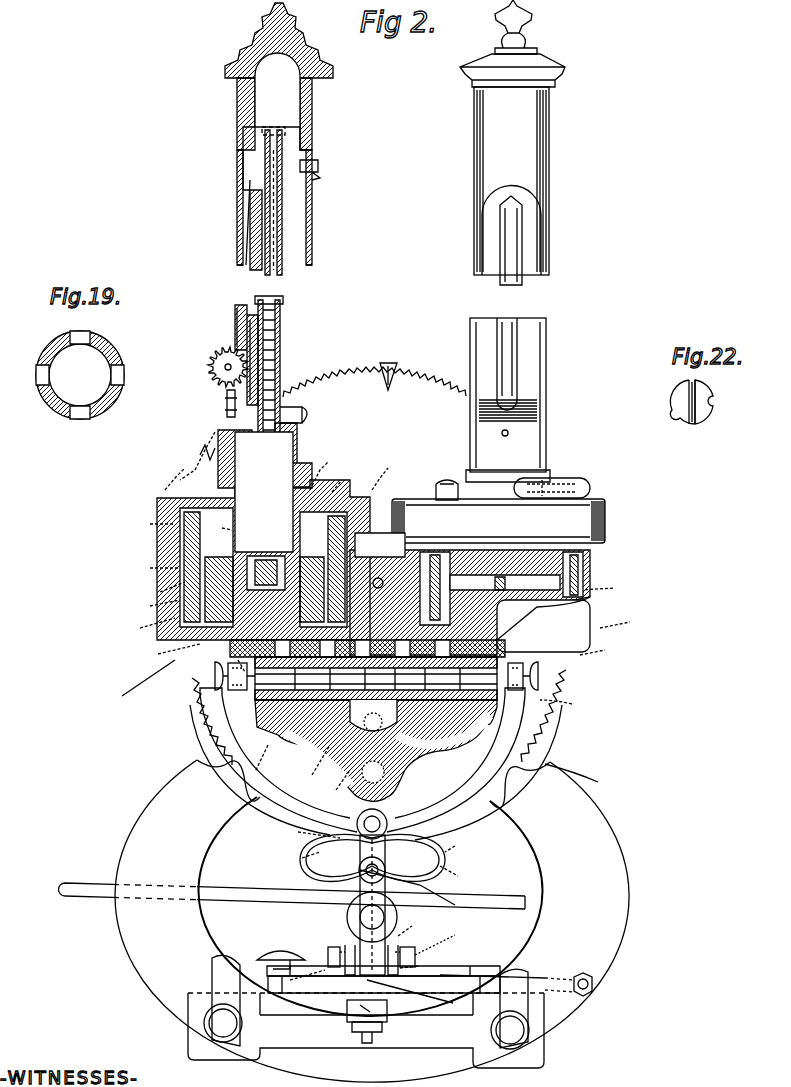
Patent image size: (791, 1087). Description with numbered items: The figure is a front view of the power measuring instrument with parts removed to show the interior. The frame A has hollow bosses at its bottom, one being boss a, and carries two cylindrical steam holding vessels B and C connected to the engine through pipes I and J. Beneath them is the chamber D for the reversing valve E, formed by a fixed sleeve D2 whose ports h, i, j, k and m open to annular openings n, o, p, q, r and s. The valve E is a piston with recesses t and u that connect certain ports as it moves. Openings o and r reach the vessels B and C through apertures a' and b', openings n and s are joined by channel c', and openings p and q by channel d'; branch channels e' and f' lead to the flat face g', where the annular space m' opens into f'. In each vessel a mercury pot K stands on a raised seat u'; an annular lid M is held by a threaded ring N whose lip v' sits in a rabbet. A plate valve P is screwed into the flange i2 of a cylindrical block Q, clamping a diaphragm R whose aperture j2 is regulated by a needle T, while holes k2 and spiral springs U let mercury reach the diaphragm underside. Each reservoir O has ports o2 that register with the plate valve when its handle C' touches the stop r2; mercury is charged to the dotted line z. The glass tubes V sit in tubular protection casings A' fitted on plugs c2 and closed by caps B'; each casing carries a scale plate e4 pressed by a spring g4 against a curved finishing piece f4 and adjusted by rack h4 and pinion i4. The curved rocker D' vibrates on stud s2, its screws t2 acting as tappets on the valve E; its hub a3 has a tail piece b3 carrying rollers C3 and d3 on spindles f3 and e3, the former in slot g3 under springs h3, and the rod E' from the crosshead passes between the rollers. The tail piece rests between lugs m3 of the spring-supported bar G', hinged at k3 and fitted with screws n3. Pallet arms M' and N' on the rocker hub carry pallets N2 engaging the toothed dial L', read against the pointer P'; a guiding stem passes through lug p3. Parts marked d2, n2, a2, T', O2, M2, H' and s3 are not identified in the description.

In FIG. 2, the ornamental cap B' is at (395, 75).
In FIG. 2, the tubular protection-casing A' is at (384, 181).
In FIG. 2, the spring g4 is at (250, 210).
In FIG. 2, the curved finishing piece f4 is at (306, 178).
In FIG. 2, the glass tube V is at (392, 217).
In FIG. 2, the scale plate e4 is at (258, 300).
In FIG. 2, the rack h4 is at (235, 330).
In FIG. 2, the pinion i4 is at (210, 372).
In FIG. 2, the plug c2 is at (218, 436).
In FIG. 2, the graduated dial arc n2 is at (374, 480).
In FIG. 2, the pointer P' is at (389, 364).
In FIG. 2, the circumferentially toothed dial L' is at (383, 421).
In FIG. 2, the handle C' is at (392, 465).
In FIG. 2, the inner peripheral lip v' is at (274, 476).
In FIG. 2, the pin d2 is at (323, 469).
In FIG. 2, the annular plate M is at (341, 477).
In FIG. 2, the stop r2 is at (443, 479).
In FIG. 2, the threaded ring N is at (365, 520).
In FIG. 2, the diaphragm R is at (361, 536).
In FIG. 2, the reservoir O is at (544, 527).
In FIG. 2, the flange a2 is at (386, 537).
In FIG. 2, the annular opening s is at (383, 559).
In FIG. 22, the annular opening s is at (700, 420).
In FIG. 2, the mercury-holding pot K is at (175, 548).
In FIG. 2, the dotted line z is at (248, 530).
In FIG. 2, the vertical flange i2 is at (379, 578).
In FIG. 2, the plate valve P is at (378, 621).
In FIG. 2, the steam holding vessel B is at (154, 607).
In FIG. 2, the aperture j2 is at (345, 627).
In FIG. 2, the raised seat u' is at (169, 651).
In FIG. 2, the support T' is at (139, 681).
In FIG. 2, the chamber O2 is at (260, 512).
In FIG. 2, the port o2 is at (278, 541).
In FIG. 2, the annular opening p is at (309, 585).
In FIG. 2, the cylindrical block Q is at (227, 594).
In FIG. 2, the hole k2 is at (269, 609).
In FIG. 2, the steam holding vessel C is at (482, 594).
In FIG. 2, the needle T is at (570, 624).
In FIG. 2, the valve chamber D is at (518, 639).
In FIG. 19, the valve chamber D is at (72, 385).
In FIG. 2, the aperture a' is at (364, 548).
In FIG. 2, the aperture b' is at (391, 550).
In FIG. 2, the annular space m' is at (351, 585).
In FIG. 2, the spiral spring U is at (383, 605).
In FIG. 2, the recess u is at (416, 657).
In FIG. 2, the channel d' is at (341, 666).
In FIG. 2, the reversing valve E is at (367, 670).
In FIG. 2, the screw t2 is at (215, 672).
In FIG. 2, the annular opening n is at (291, 658).
In FIG. 2, the annular opening o is at (332, 645).
In FIG. 2, the annular opening q is at (370, 647).
In FIG. 2, the annular opening r is at (389, 650).
In FIG. 2, the port k is at (340, 685).
In FIG. 2, the outer face g' is at (271, 687).
In FIG. 2, the port h is at (299, 685).
In FIG. 19, the port h is at (36, 375).
In FIG. 2, the port i is at (314, 685).
In FIG. 2, the port j is at (393, 685).
In FIG. 2, the port m is at (481, 685).
In FIG. 2, the channel c' is at (376, 750).
In FIG. 2, the recess t is at (267, 757).
In FIG. 2, the branch channel f' is at (311, 767).
In FIG. 2, the branch channel e' is at (334, 786).
In FIG. 2, the pallet arm M' is at (361, 764).
In FIG. 2, the rack arm M2 is at (192, 712).
In FIG. 2, the pallet N2 is at (565, 712).
In FIG. 2, the pallet arm N' is at (580, 778).
In FIG. 2, the fixed sleeve D2 is at (567, 703).
In FIG. 19, the fixed sleeve D2 is at (112, 398).
In FIG. 2, the stud s2 is at (417, 745).
In FIG. 2, the curved rocker D' is at (388, 819).
In FIG. 2, the frame A is at (372, 921).
In FIG. 2, the rod E' is at (292, 888).
In FIG. 2, the upper roller C3 is at (372, 857).
In FIG. 2, the hub a3 is at (417, 857).
In FIG. 2, the spring h3 is at (380, 853).
In FIG. 2, the slot g3 is at (455, 878).
In FIG. 2, the lower roller d3 is at (345, 902).
In FIG. 2, the spindle f3 is at (353, 873).
In FIG. 2, the spindle e3 is at (379, 917).
In FIG. 2, the tail piece b3 is at (414, 935).
In FIG. 2, the lug m3 is at (394, 944).
In FIG. 2, the spring-supported bar G' is at (383, 960).
In FIG. 2, the screw n3 is at (355, 973).
In FIG. 2, the knob H' is at (272, 948).
In FIG. 2, the plate s3 is at (421, 989).
In FIG. 2, the lug p3 is at (374, 1021).
In FIG. 2, the hollow boss a is at (366, 1039).
In FIG. 2, the pipe I is at (212, 976).
In FIG. 2, the pipe J is at (510, 1035).
In FIG. 2, the hinge k3 is at (582, 972).